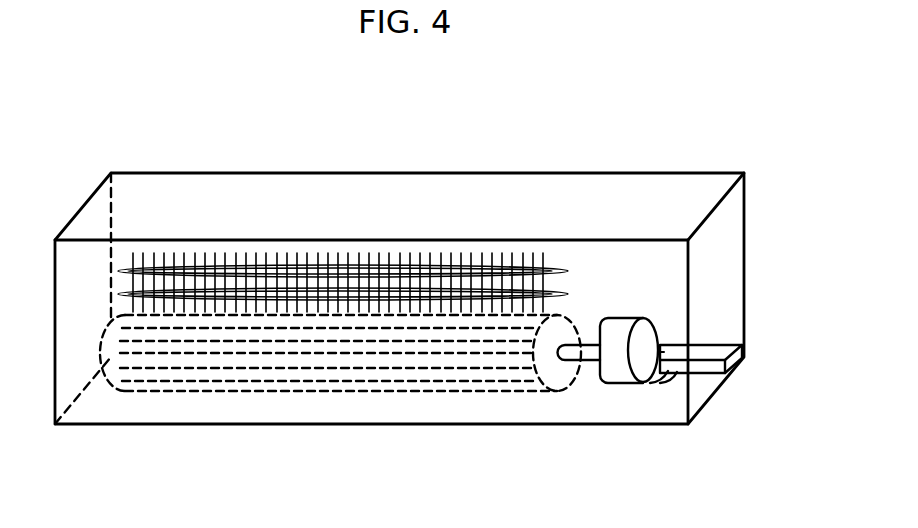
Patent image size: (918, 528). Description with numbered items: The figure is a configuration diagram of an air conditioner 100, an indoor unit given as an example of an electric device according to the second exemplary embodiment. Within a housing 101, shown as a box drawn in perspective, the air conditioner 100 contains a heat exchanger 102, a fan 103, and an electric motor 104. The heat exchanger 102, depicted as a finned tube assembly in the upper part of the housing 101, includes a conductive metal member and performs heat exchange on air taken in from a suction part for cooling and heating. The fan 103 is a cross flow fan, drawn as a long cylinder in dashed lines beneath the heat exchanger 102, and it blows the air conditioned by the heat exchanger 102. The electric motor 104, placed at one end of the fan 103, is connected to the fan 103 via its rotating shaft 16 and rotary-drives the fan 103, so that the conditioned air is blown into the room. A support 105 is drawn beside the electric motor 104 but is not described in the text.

The air conditioner 100 is at (170, 163).
The housing 101 is at (497, 172).
The heat exchanger 102 is at (369, 272).
The fan 103 is at (300, 393).
The rotating shaft 16 is at (593, 353).
The electric motor 104 is at (622, 385).
The motor mount 105 is at (714, 348).